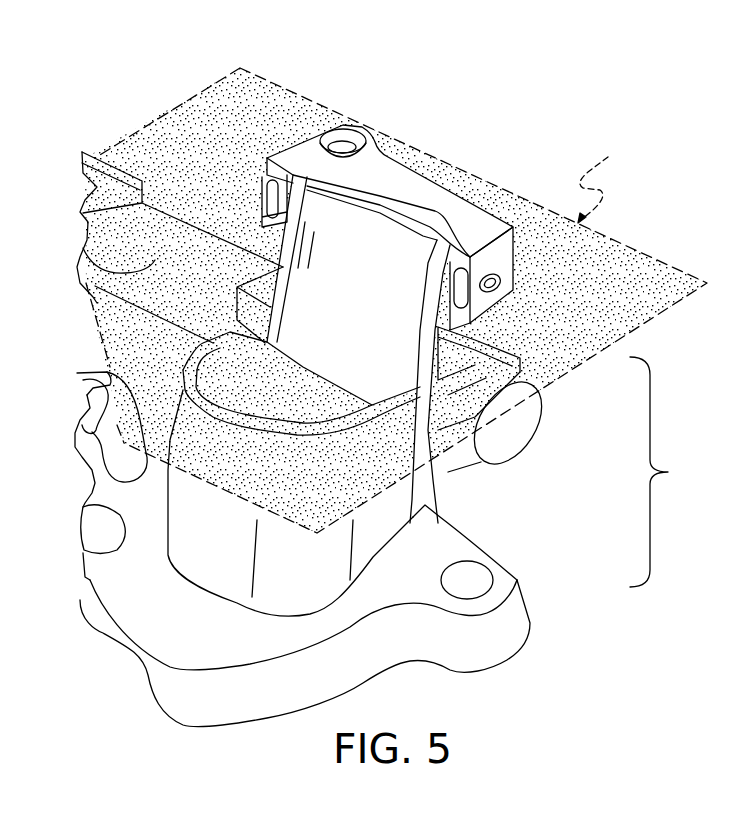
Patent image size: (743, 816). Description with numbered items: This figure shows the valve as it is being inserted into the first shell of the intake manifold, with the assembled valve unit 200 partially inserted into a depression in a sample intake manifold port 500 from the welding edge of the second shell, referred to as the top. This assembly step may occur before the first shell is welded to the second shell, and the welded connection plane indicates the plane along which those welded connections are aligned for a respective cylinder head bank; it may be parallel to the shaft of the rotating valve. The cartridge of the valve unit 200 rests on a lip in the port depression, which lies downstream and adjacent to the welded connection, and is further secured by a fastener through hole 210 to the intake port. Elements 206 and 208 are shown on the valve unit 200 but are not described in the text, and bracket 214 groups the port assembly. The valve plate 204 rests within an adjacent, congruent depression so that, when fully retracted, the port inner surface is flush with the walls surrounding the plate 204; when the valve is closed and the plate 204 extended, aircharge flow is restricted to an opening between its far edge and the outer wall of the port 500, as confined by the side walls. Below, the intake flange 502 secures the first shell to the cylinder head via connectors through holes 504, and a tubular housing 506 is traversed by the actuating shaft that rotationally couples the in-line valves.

The valve unit 200 is at (444, 180).
The valve plate 204 is at (382, 295).
The fastener clip 206 is at (514, 290).
The clip 208 is at (252, 195).
The hole 210 is at (366, 124).
The boss assembly 214 is at (674, 472).
The intake manifold port 500 is at (320, 579).
The intake flange 502 is at (208, 638).
The holes 504 is at (94, 374).
The tubular housing 506 is at (82, 250).